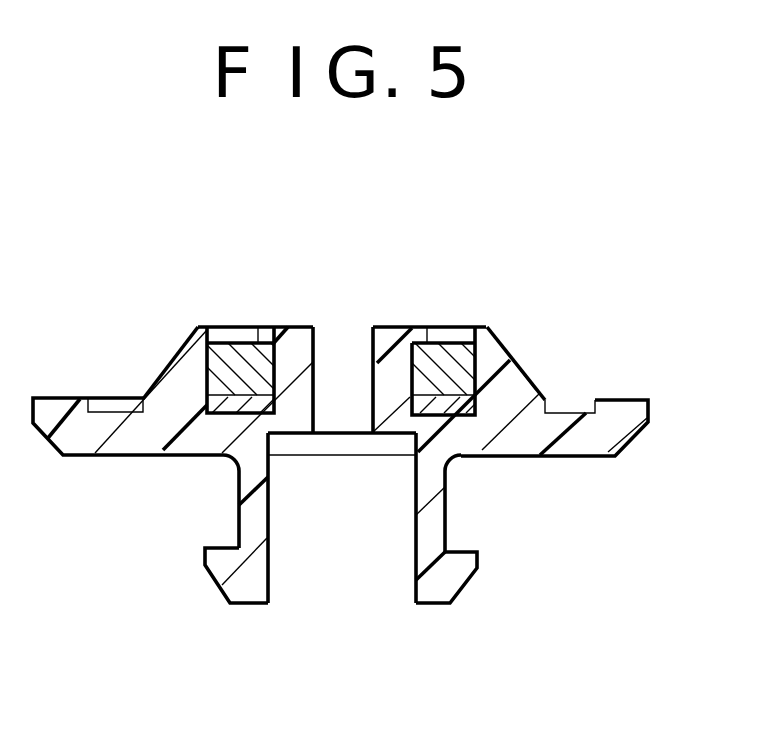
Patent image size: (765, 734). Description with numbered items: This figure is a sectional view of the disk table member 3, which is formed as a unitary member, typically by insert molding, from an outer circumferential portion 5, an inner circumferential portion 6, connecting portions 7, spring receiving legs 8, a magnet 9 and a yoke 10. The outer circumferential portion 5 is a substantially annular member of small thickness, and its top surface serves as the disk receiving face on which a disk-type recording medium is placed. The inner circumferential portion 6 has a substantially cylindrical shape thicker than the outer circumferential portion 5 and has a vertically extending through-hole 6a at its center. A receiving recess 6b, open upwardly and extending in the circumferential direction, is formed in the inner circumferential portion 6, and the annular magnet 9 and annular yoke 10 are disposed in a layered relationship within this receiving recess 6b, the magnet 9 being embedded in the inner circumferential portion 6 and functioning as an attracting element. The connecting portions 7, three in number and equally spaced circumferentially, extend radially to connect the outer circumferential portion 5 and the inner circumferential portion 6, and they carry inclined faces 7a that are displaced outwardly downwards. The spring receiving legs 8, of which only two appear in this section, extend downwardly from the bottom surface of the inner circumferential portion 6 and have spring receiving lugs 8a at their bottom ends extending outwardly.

The disk table member 3 is at (528, 278).
The outer circumferential portion 5 is at (632, 413).
The inner circumferential portion 6 is at (300, 343).
The through-hole 6a is at (327, 353).
The receiving recess 6b is at (210, 368).
The connecting portions 7 is at (148, 383).
The inclined faces 7a is at (173, 360).
The spring receiving legs 8 is at (249, 592).
The spring receiving lugs 8a is at (218, 548).
The magnet 9 is at (438, 353).
The yoke 10 is at (448, 408).